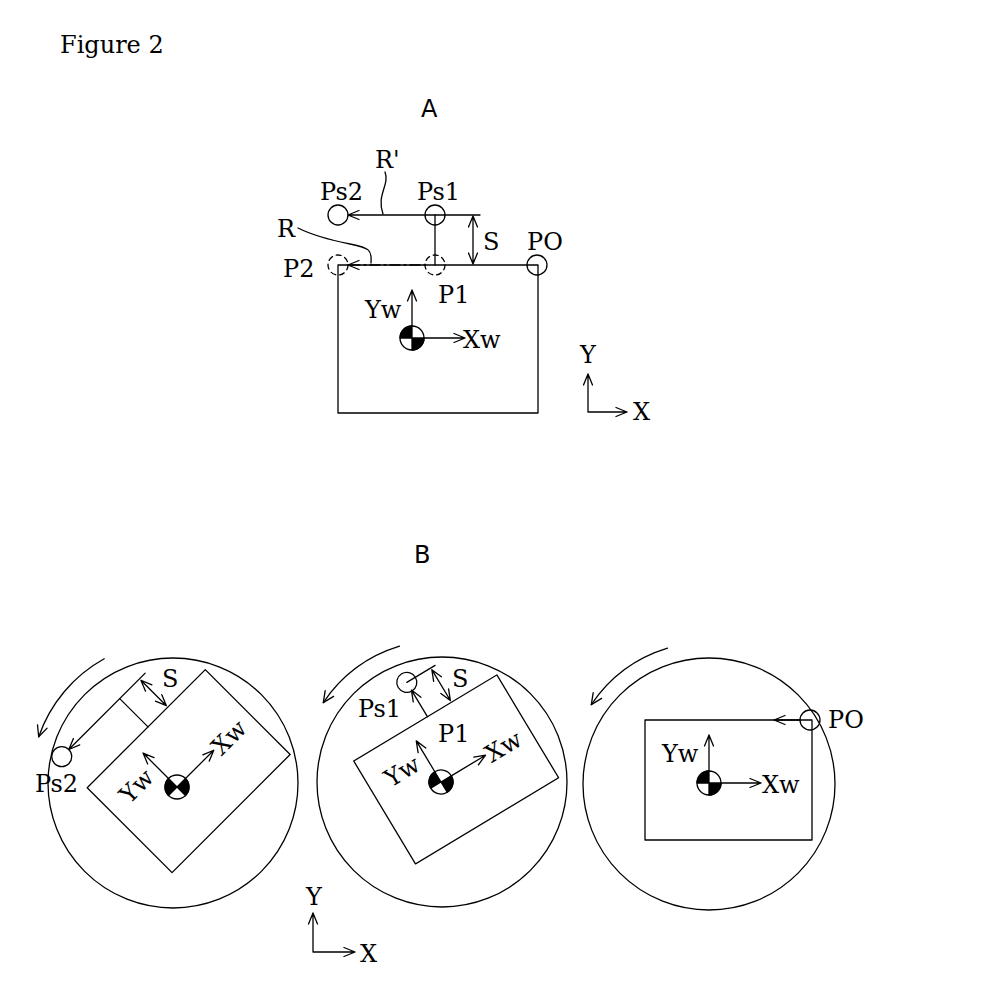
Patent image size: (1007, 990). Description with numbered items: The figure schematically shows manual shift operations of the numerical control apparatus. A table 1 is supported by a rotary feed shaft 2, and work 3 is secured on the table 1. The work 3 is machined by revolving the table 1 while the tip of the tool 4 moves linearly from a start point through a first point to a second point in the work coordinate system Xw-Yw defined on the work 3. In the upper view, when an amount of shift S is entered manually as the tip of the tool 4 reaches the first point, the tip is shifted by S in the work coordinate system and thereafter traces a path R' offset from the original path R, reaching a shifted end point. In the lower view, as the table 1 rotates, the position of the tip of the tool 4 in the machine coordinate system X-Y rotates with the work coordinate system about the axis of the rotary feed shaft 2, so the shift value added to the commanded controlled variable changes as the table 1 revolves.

In FIG. 2B, the table 1 is at (714, 660).
In FIG. 2A, the rotary feed shaft 2 is at (410, 351).
In FIG. 2B, the rotary feed shaft 2 is at (706, 795).
In FIG. 2A, the work 3 is at (350, 365).
In FIG. 2B, the work 3 is at (726, 840).
In FIG. 2A, the tool 4 is at (547, 270).
In FIG. 2B, the tool 4 is at (812, 710).